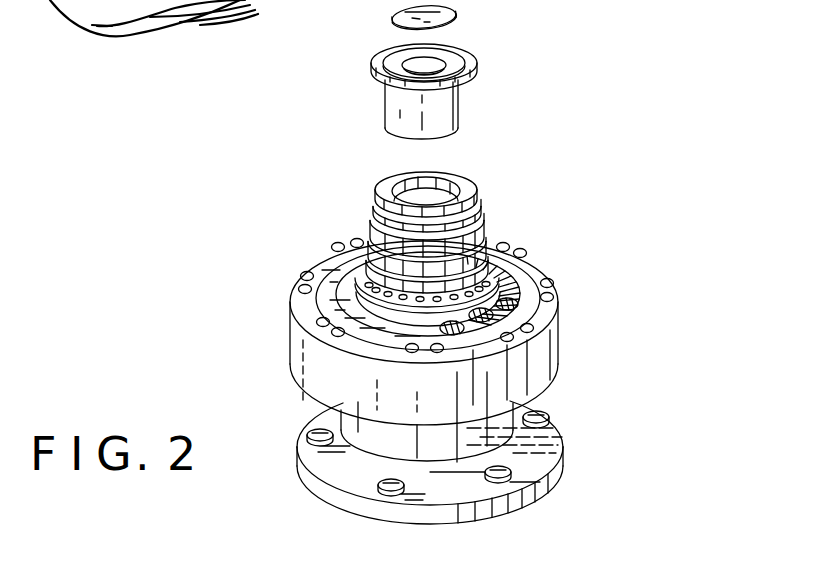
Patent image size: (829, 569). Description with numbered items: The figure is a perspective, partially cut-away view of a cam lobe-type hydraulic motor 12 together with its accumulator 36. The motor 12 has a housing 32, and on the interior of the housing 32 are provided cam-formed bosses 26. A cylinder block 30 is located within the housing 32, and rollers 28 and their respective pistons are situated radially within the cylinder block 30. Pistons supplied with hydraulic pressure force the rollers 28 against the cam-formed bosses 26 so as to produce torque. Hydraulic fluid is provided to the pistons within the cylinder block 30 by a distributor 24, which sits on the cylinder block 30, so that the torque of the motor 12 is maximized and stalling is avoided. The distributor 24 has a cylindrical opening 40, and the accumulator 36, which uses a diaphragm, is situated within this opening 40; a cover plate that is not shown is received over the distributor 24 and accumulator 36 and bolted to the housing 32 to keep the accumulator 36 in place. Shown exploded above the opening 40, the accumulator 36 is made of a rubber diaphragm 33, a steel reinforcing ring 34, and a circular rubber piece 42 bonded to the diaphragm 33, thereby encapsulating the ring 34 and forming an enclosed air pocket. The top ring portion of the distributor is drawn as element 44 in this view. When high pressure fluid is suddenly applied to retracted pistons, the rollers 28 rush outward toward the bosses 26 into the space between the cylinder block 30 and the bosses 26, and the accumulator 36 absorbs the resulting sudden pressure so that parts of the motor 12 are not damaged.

The hydraulic motor 12 is at (562, 228).
The distributor 24 is at (355, 209).
The cam-formed bosses 26 is at (560, 312).
The rollers 28 is at (484, 344).
The cylinder block 30 is at (342, 296).
The housing 32 is at (303, 345).
The rubber diaphragm 33 is at (448, 117).
The steel reinforcing ring 34 is at (392, 60).
The accumulator 36 is at (362, 95).
The cylindrical opening 40 is at (452, 182).
The circular rubber piece 42 is at (455, 13).
The top ring 44 is at (383, 182).